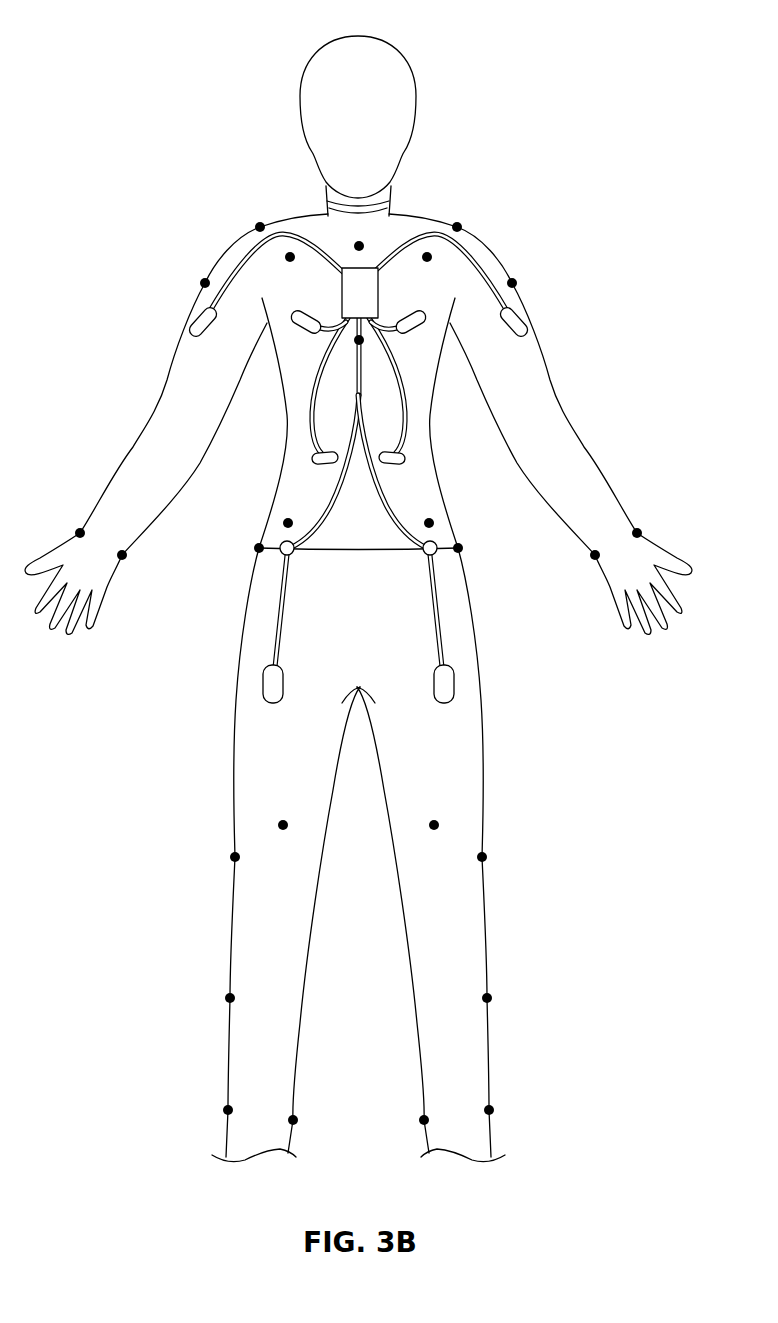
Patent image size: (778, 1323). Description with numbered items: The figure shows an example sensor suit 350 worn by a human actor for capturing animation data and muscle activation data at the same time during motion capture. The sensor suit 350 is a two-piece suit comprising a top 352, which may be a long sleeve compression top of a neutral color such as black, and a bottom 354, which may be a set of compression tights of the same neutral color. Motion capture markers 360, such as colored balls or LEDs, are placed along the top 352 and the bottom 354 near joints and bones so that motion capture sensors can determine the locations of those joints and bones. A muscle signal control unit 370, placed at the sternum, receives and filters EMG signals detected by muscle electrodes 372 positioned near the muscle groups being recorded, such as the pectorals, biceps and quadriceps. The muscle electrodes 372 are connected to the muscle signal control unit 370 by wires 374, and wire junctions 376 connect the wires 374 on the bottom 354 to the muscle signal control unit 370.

The sensor suit 350 is at (358, 585).
The top 352 is at (552, 430).
The bottom 354 is at (468, 734).
The motion capture markers 360 is at (398, 286).
The muscle signal control unit 370 is at (371, 268).
The muscle electrodes 372 is at (518, 320).
The wires 374 is at (407, 408).
The wire junctions 376 is at (436, 545).